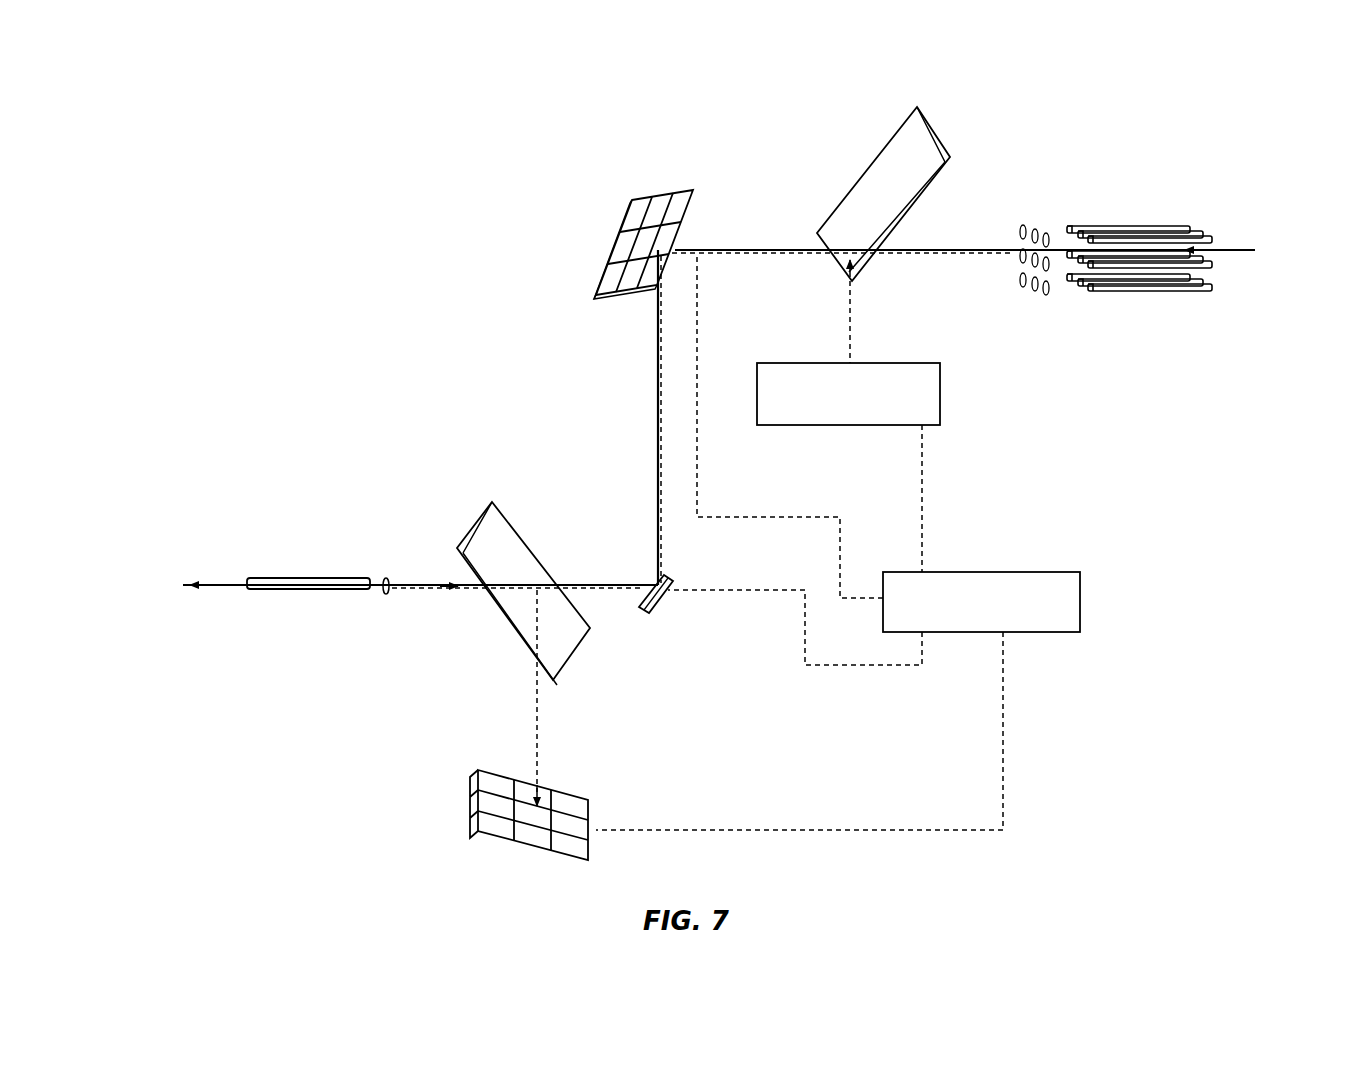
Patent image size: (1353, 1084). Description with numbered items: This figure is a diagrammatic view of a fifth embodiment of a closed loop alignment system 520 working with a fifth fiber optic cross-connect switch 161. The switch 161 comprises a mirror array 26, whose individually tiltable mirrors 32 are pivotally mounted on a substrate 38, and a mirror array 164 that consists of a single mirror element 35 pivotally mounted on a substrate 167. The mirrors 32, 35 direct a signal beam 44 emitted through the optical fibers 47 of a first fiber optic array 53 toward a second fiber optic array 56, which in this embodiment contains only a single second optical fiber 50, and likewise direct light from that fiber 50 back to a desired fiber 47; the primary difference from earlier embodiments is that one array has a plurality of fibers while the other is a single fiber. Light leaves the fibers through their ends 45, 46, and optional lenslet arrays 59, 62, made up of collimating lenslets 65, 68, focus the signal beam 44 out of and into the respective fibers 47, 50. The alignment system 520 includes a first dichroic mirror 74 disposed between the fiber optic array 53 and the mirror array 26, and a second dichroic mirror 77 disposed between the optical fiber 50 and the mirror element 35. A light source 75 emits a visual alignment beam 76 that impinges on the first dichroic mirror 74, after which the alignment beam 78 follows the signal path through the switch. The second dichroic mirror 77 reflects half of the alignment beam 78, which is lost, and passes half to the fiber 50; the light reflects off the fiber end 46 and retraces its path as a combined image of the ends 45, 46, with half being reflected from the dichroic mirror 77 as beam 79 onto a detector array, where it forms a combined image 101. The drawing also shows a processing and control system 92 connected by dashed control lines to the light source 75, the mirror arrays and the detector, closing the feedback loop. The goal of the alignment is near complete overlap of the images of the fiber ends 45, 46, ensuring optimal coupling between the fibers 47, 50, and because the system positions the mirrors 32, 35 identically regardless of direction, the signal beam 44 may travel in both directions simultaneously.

The first mirror array 26 is at (626, 227).
The tiltable mirror 32 is at (622, 242).
The substrate 38 is at (695, 270).
The signal beam 44 is at (913, 250).
The first dichroic mirror 74 is at (930, 122).
The visual alignment beam 76 is at (843, 304).
The alignment beam 78 is at (948, 256).
The light source 75 is at (868, 362).
The processing and control system 92 is at (998, 572).
The closed loop alignment system 520 is at (1027, 103).
The fifth fiber optic cross-connect switch 161 is at (1092, 138).
The first lenslet array 59 is at (1020, 249).
The collimating lenslet 65 is at (1046, 298).
The first fiber optic array 53 is at (1139, 231).
The first optical fiber 47 is at (1148, 238).
The fiber end 45 is at (1090, 292).
The second fiber optic array 56 is at (308, 574).
The second optical fiber 50 is at (310, 590).
The fiber end 46 is at (409, 553).
The collimating lenslet 68 is at (390, 578).
The second lenslet array 62 is at (381, 597).
The second dichroic mirror 77 is at (505, 532).
The reflected beam 79 is at (542, 700).
The second mirror array 164 is at (694, 598).
The mirror element 35 is at (694, 626).
The substrate 167 is at (675, 600).
The combined image 101 is at (532, 808).